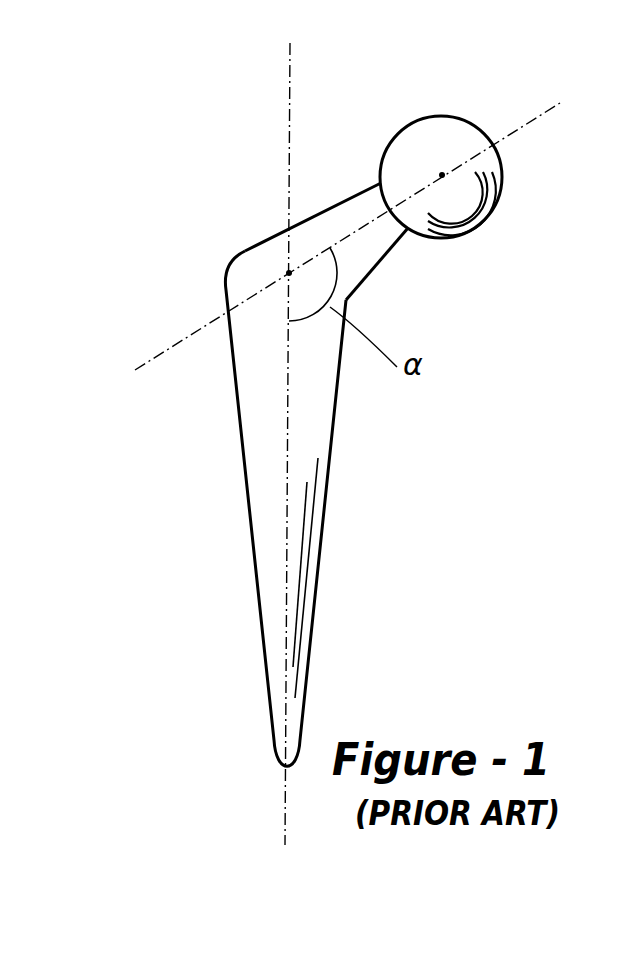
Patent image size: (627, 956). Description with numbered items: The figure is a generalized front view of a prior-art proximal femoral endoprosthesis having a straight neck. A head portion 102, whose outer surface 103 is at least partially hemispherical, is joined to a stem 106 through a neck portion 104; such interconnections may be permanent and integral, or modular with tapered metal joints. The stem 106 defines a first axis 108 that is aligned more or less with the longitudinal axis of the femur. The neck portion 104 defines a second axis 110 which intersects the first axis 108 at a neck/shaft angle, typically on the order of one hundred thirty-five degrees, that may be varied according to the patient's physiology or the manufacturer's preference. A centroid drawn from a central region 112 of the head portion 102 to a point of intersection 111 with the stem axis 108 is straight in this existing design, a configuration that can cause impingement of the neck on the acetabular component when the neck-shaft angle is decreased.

The head portion 102 is at (455, 137).
The outer surface 103 is at (482, 218).
The neck portion 104 is at (367, 257).
The stem 106 is at (333, 410).
The first axis 108 is at (290, 102).
The second axis 110 is at (175, 348).
The point of intersection 111 is at (289, 273).
The central region 112 is at (442, 175).